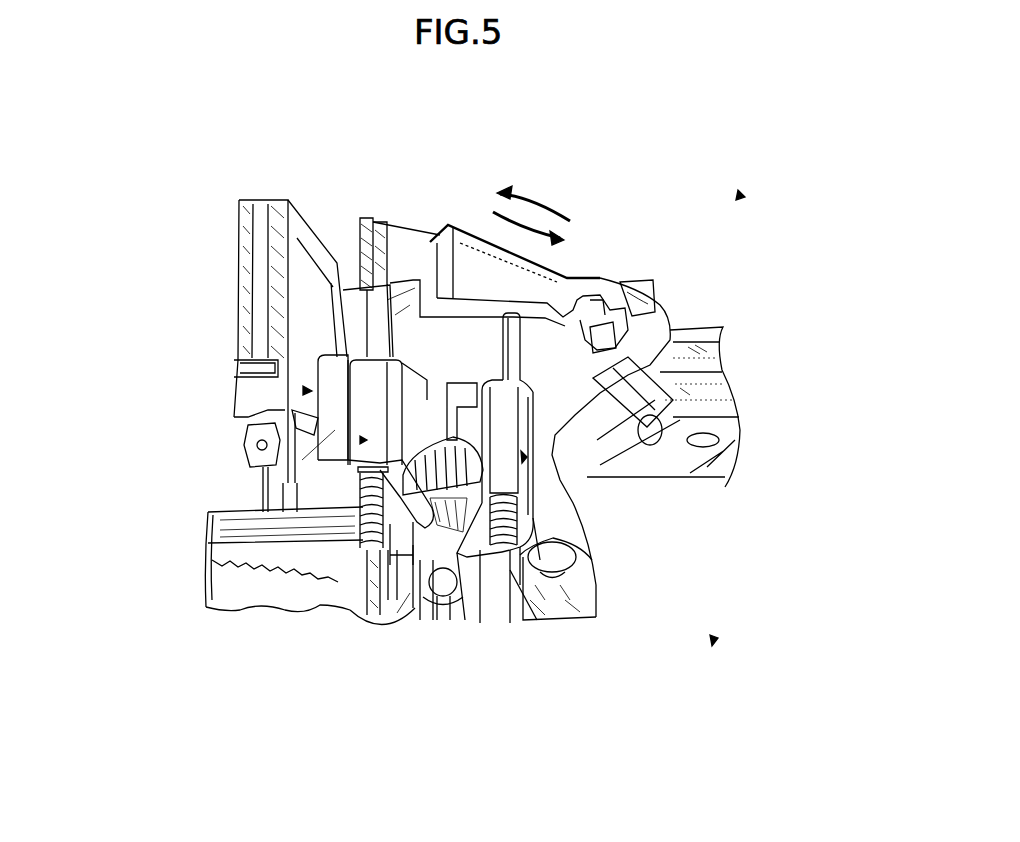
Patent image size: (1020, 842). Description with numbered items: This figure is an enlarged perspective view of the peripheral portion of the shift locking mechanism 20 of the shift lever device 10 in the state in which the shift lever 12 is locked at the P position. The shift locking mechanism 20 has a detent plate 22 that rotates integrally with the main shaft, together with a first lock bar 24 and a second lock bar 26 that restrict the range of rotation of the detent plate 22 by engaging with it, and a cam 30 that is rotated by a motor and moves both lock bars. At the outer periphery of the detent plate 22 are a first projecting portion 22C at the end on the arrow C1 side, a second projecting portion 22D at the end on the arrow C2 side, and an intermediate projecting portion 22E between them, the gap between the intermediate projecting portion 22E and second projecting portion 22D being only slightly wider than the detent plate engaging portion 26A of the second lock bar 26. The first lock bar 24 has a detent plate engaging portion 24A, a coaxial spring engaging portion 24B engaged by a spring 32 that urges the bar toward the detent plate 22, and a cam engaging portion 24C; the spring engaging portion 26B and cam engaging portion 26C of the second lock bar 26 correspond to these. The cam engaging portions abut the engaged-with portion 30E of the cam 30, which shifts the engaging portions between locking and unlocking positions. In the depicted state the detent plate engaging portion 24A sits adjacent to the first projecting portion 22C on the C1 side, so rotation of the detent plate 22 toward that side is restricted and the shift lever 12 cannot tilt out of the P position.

The shift lever device 10 is at (737, 199).
The shift lever 12 is at (700, 330).
The shift locking mechanism 20 is at (712, 638).
The detent plate 22 is at (555, 307).
The first projecting portion 22C is at (406, 262).
The second projecting portion 22D is at (648, 265).
The intermediate projecting portion 22E is at (607, 307).
The first lock bar 24 is at (367, 440).
The detent plate engaging portion 24A is at (356, 216).
The spring engaging portion 24B is at (348, 389).
The cam engaging portion 24C is at (400, 593).
The second lock bar 26 is at (527, 457).
The detent plate engaging portion 26A is at (512, 357).
The spring engaging portion 26B is at (573, 493).
The cam engaging portion 26C is at (480, 582).
The cam 30 is at (437, 680).
The engaged-with portion 30E is at (453, 582).
The spring 32 is at (367, 547).
The rotation peripheral direction one side C1 is at (543, 202).
The rotation peripheral direction another side C2 is at (497, 195).